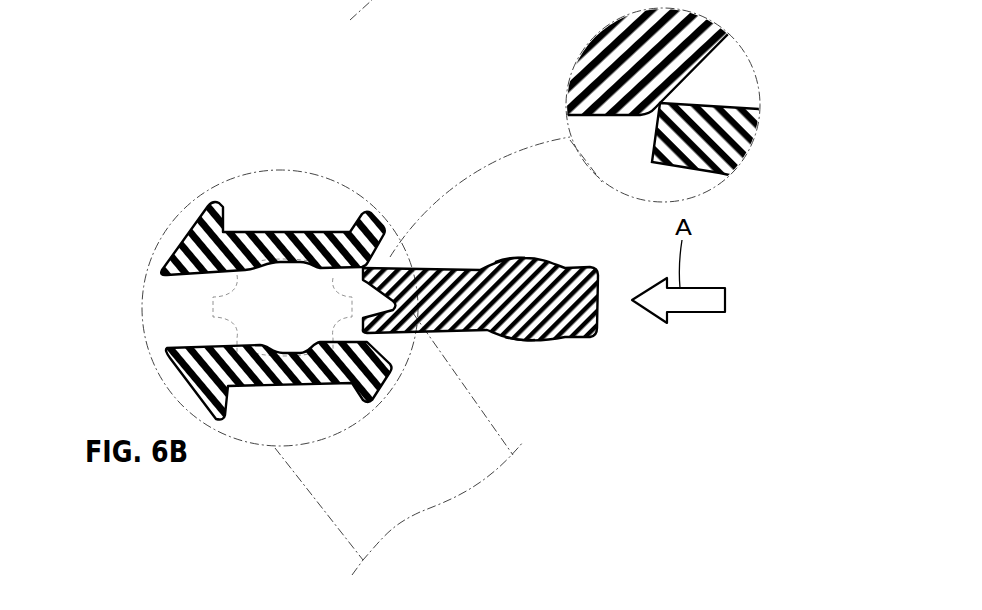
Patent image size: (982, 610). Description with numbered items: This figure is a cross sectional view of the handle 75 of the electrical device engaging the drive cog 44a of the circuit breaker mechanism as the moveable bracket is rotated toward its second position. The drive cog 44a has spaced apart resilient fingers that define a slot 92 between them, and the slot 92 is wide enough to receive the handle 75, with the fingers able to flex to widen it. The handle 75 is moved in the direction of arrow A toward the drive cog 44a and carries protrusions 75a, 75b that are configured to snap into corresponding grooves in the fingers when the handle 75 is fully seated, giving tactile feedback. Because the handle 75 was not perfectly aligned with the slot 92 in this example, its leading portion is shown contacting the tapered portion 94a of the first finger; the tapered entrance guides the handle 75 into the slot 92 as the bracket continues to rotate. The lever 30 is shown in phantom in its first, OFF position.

The lever 30 is at (307, 487).
The drive cog 44a is at (197, 223).
The handle 75 is at (500, 273).
The protrusion 75a is at (530, 257).
The protrusion 75b is at (532, 342).
The slot 92 is at (163, 338).
The tapered portion 94a is at (692, 68).